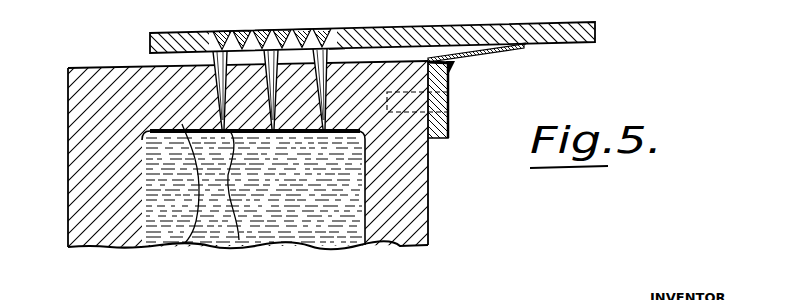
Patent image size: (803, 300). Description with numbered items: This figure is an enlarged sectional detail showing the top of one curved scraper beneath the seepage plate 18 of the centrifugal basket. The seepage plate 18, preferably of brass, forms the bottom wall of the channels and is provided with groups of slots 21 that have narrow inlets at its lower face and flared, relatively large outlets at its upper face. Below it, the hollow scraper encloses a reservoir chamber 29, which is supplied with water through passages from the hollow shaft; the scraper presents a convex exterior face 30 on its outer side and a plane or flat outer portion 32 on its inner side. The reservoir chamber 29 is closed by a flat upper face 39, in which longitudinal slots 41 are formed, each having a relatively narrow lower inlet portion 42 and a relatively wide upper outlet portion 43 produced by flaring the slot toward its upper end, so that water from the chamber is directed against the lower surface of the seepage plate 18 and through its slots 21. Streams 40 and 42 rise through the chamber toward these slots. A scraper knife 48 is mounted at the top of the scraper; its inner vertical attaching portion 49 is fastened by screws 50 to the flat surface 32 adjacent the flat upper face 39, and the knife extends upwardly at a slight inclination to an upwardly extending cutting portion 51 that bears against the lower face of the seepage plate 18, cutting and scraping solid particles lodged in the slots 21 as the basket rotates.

The seepage plate 18 is at (520, 3).
The slots 21 is at (302, 32).
The reservoir chambers 29 is at (323, 240).
The convex exterior faces 30 is at (68, 128).
The plane or flat outer portions 32 is at (430, 190).
The flat upper face 39 is at (113, 67).
The liquid stream 40 is at (185, 243).
The slots 41 is at (336, 80).
The lower inlet portions 42 is at (239, 240).
The upper outlet portions 43 is at (334, 80).
The scraper knife 48 is at (497, 53).
The inner vertical attaching portion 49 is at (444, 128).
The screws 50 is at (450, 101).
The upwardly extending cutting portion 51 is at (524, 46).